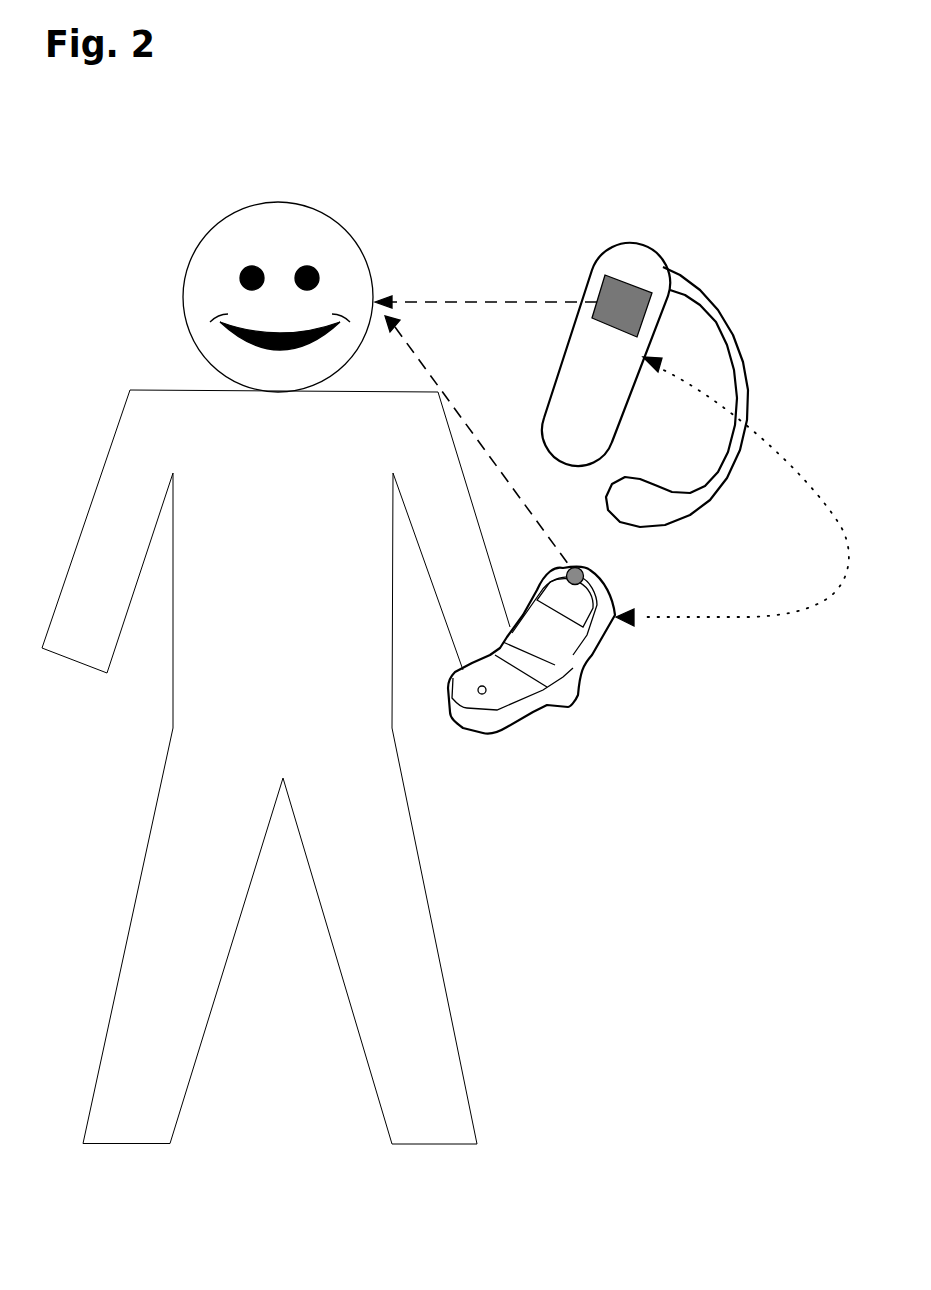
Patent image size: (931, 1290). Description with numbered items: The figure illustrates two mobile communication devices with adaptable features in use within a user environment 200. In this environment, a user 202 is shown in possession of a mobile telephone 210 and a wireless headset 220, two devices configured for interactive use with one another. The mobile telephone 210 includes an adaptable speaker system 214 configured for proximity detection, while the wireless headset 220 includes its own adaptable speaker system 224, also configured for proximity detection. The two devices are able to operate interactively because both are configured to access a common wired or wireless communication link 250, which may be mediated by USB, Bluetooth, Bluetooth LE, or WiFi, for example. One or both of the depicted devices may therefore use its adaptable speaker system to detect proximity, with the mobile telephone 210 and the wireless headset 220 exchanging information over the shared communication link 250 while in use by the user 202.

The user environment 200 is at (708, 130).
The user 202 is at (230, 213).
The mobile telephone 210 is at (562, 646).
The adaptable speaker system 214 is at (587, 572).
The wireless headset 220 is at (645, 385).
The adaptable speaker system 224 is at (640, 315).
The communication link 250 is at (710, 622).